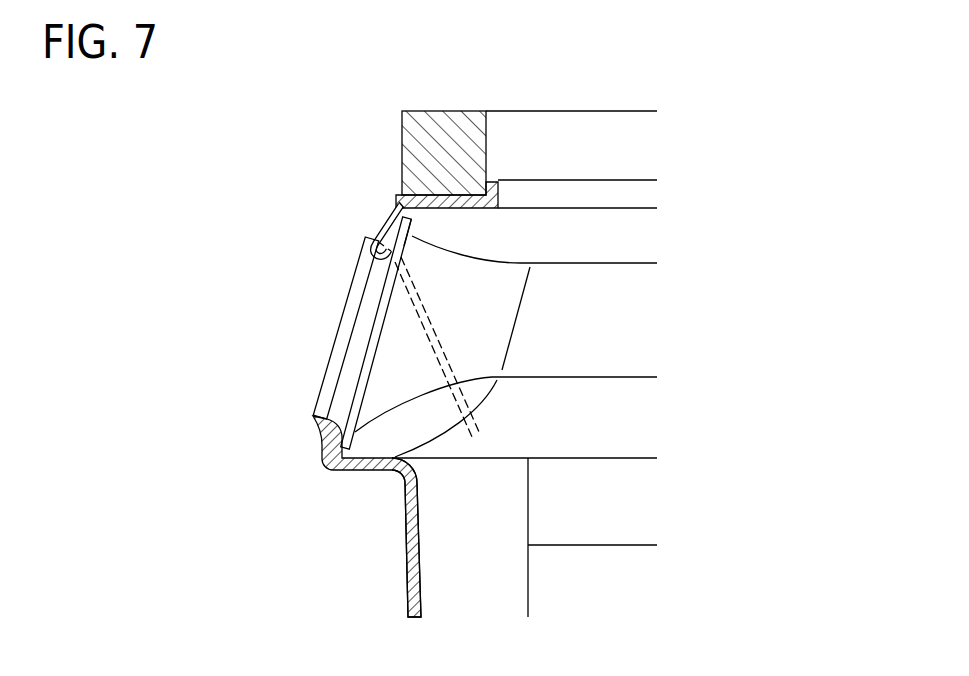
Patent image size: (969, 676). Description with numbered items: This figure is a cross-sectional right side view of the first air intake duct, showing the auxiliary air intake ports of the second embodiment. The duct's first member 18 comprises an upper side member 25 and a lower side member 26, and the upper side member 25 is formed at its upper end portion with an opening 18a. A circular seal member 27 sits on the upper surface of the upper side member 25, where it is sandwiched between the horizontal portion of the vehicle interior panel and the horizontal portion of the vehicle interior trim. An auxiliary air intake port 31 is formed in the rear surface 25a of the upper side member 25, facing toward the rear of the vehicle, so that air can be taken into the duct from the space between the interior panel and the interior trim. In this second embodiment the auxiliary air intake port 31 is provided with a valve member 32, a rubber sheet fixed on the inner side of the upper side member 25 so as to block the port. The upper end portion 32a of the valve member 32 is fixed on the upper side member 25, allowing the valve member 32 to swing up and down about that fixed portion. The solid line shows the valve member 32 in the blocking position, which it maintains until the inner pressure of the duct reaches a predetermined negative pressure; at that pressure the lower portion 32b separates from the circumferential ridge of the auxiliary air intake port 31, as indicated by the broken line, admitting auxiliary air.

The first member 18 is at (315, 525).
The opening 18a is at (498, 182).
The upper side member 25 is at (308, 453).
The rear surface 25a is at (388, 222).
The lower side member 26 is at (394, 571).
The circular seal member 27 is at (402, 137).
The auxiliary air intake port 31 is at (340, 283).
The valve member 32 is at (350, 367).
The upper end portion 32a is at (412, 228).
The lower portion 32b is at (470, 418).